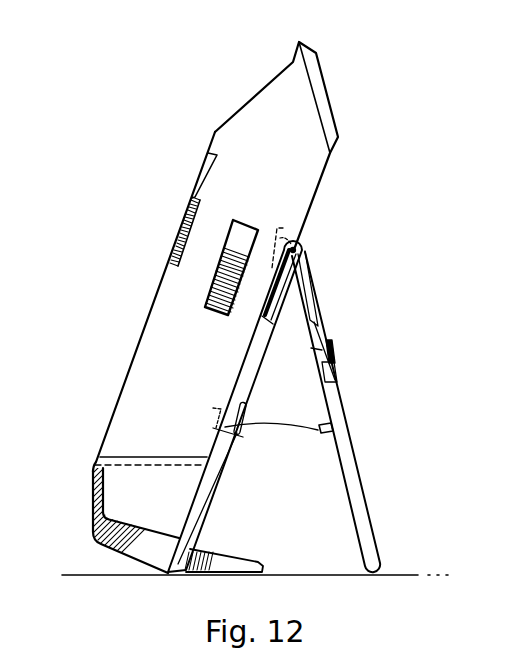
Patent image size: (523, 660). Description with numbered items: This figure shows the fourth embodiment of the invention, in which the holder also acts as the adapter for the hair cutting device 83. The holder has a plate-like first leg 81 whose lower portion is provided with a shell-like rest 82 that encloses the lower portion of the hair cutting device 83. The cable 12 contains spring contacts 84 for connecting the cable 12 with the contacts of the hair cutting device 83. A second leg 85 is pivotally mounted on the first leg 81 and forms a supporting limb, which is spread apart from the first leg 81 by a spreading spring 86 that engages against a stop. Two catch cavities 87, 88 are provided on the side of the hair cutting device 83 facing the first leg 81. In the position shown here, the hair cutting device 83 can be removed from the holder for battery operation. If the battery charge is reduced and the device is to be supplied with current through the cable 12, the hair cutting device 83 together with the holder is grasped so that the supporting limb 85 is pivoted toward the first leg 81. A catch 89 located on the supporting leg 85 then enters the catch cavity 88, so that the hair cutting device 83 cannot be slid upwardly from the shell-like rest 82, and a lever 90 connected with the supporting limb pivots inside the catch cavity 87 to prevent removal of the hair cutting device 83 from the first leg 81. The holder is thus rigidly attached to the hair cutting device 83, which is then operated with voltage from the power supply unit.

The cable 12 is at (241, 566).
The first leg 81 is at (200, 505).
The shell-like rest 82 is at (99, 546).
The hair cutting device 83 is at (157, 308).
The spring contacts 84 is at (128, 524).
The second leg 85 is at (348, 465).
The spreading spring 86 is at (308, 278).
The catch cavity 87 is at (283, 230).
The catch cavity 88 is at (228, 420).
The catch 89 is at (326, 434).
The lever 90 is at (296, 247).